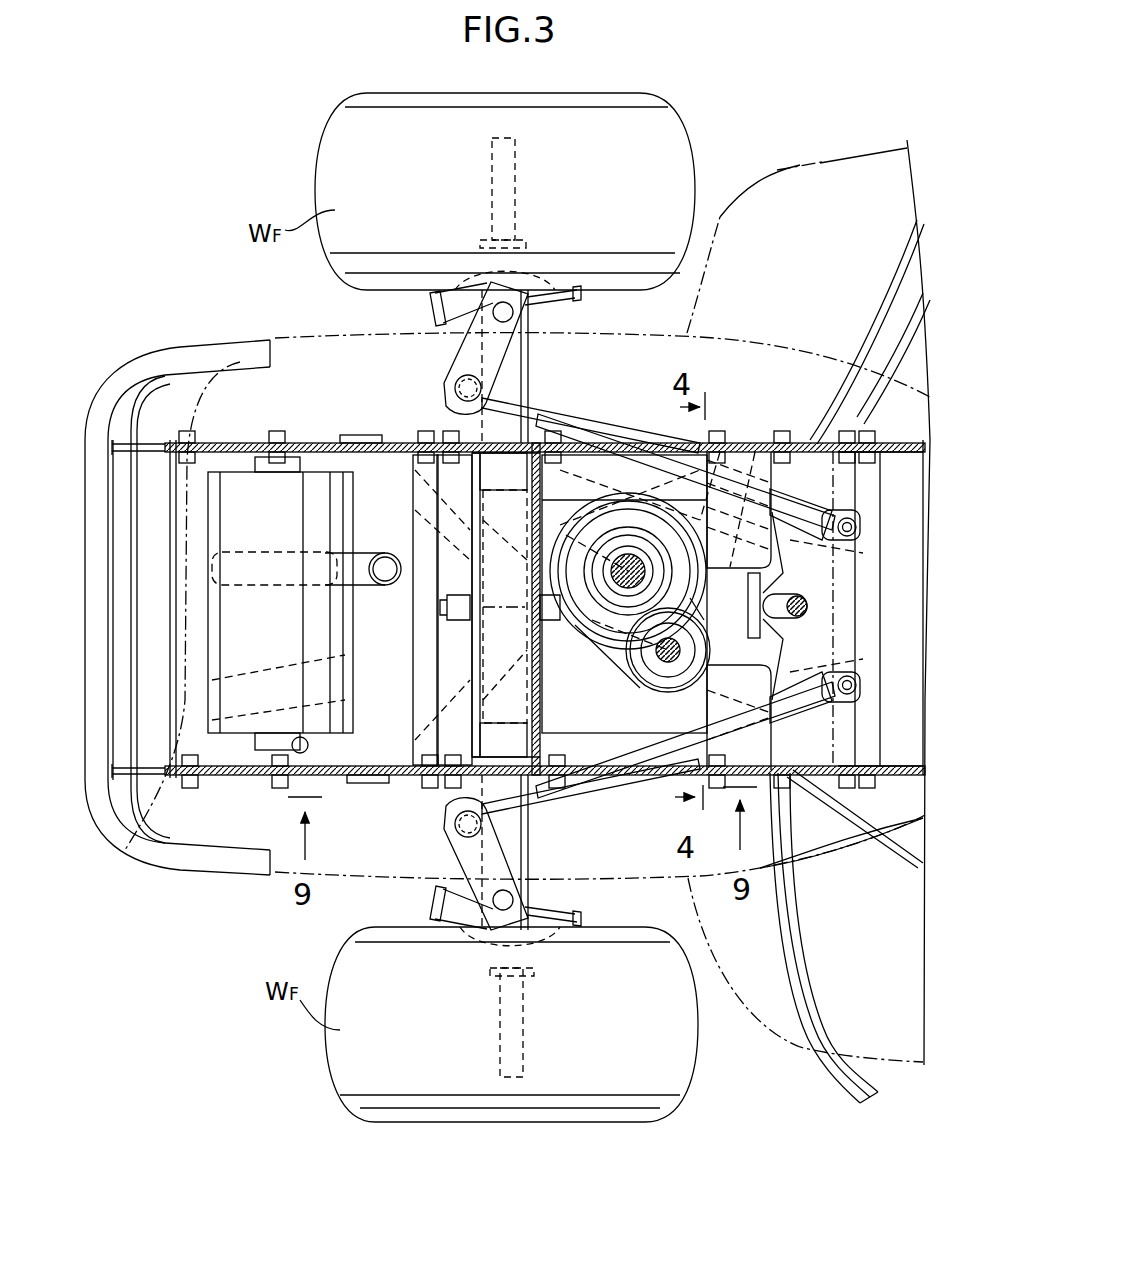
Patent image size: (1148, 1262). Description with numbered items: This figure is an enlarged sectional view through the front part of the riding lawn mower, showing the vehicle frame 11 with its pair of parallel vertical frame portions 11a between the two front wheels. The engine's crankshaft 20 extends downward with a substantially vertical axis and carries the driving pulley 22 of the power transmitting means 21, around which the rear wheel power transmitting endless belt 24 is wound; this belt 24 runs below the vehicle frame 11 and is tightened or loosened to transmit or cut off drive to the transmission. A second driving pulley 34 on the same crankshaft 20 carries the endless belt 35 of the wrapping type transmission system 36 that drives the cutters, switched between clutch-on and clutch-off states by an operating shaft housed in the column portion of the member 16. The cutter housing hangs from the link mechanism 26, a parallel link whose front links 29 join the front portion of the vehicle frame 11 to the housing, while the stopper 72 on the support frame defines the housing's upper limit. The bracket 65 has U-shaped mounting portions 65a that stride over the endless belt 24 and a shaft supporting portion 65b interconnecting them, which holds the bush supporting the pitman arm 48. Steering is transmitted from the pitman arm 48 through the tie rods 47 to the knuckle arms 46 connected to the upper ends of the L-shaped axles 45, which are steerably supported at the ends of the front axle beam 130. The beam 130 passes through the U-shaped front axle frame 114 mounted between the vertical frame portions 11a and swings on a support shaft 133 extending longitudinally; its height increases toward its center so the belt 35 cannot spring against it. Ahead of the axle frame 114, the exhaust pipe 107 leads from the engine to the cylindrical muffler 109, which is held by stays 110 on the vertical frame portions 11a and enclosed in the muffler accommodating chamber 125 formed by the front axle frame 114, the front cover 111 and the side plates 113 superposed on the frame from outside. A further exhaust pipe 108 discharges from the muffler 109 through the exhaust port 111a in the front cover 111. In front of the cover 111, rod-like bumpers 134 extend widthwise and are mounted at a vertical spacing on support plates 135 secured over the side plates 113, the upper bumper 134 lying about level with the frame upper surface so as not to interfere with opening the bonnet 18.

The vehicle frame 11 is at (830, 460).
The vertical frame portions 11a is at (910, 452).
The fender 16 is at (828, 163).
The bonnet 18 is at (360, 338).
The crankshaft 20 is at (628, 555).
The power transmitting means 21 is at (635, 690).
The driving pulley 22 is at (708, 520).
The rear wheel power transmitting endless belt 24 is at (702, 520).
The link mechanism 26 is at (605, 765).
The front links 29 is at (588, 472).
The driving pulley 34 is at (580, 622).
The endless belt 35 is at (890, 845).
The wrapping type transmission system 36 is at (850, 822).
The axles 45 is at (505, 312).
The knuckle arms 46 is at (470, 375).
The tie rods 47 is at (545, 415).
The pitman arm 48 is at (845, 610).
The bracket 65 is at (860, 685).
The mounting portions 65a is at (860, 528).
The shaft supporting portion 65b is at (790, 590).
The stopper 72 is at (865, 645).
The exhaust pipe 107 is at (362, 556).
The exhaust pipe 108 is at (228, 775).
The muffler 109 is at (335, 607).
The stays 110 is at (235, 443).
The front cover 111 is at (200, 520).
The exhaust port 111a is at (175, 740).
The side plates 113 is at (320, 443).
The front axle frame 114 is at (470, 680).
The muffler accommodating chamber 125 is at (415, 660).
The front axle beam 130 is at (500, 760).
The support shaft 133 is at (503, 600).
The bumpers 134 is at (120, 650).
The support plates 135 is at (160, 530).